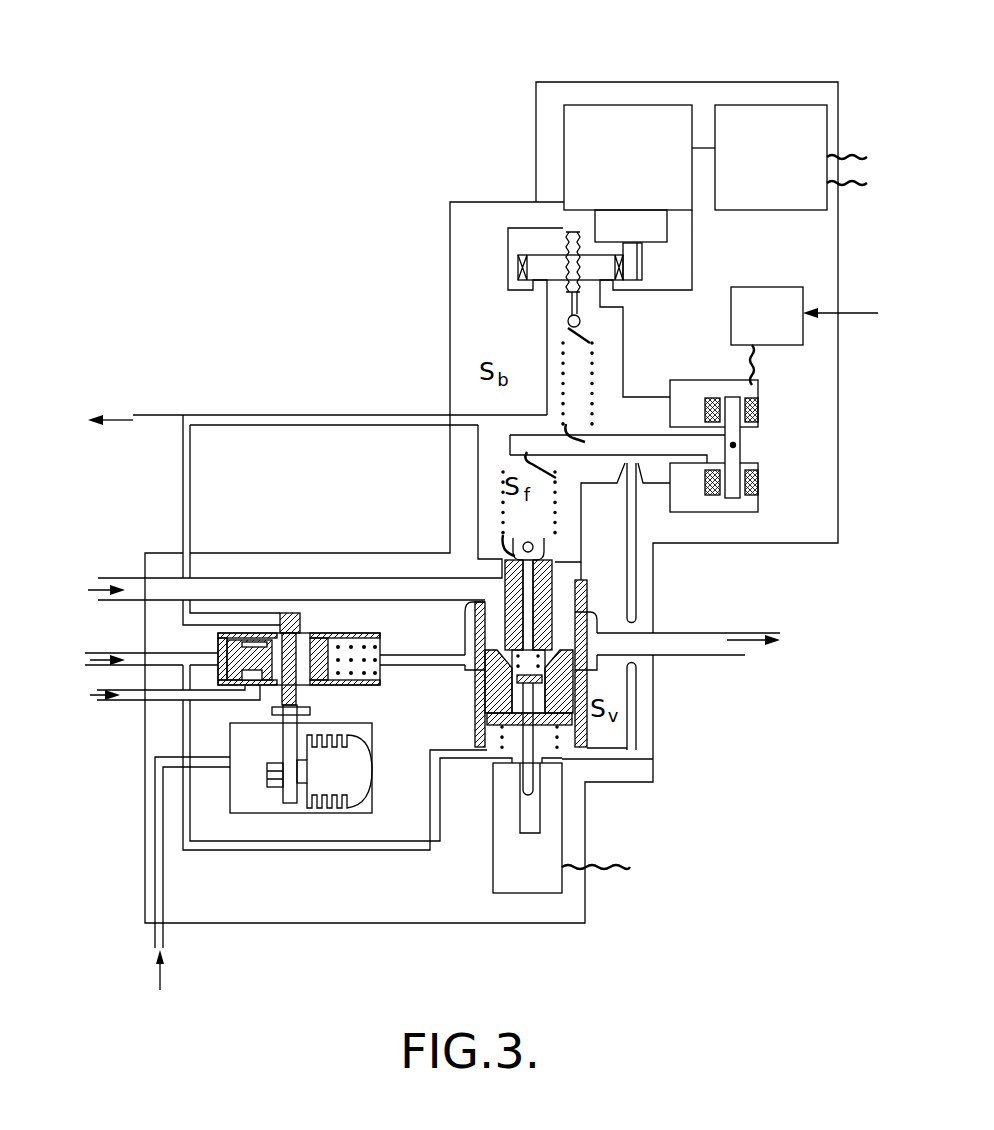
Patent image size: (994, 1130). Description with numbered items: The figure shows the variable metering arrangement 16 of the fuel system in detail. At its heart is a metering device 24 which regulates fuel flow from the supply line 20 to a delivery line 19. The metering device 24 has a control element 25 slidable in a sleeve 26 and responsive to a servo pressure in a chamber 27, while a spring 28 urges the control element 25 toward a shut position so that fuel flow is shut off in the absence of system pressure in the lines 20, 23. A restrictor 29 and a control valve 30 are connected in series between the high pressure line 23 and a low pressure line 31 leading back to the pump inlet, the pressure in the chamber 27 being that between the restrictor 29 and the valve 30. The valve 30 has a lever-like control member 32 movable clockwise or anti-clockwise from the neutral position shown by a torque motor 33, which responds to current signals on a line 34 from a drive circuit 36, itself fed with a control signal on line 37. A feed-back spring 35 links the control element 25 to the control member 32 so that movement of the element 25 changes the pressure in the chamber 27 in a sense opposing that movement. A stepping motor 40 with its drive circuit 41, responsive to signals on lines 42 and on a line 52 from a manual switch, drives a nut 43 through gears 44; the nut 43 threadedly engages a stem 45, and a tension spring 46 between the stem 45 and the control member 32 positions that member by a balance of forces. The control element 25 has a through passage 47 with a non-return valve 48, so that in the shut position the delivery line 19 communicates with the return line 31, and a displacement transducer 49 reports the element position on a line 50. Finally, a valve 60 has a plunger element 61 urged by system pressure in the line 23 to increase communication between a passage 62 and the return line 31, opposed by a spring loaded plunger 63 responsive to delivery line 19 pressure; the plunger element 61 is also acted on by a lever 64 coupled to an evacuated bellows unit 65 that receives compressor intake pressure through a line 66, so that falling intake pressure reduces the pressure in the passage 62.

The metering arrangement 16 is at (357, 910).
The delivery line 19 is at (718, 645).
The supply line 20 is at (118, 578).
The high pressure line 23 is at (130, 655).
The metering device 24 is at (592, 625).
The control element 25 is at (560, 690).
The sleeve 26 is at (478, 708).
The chamber 27 is at (540, 748).
The spring 28 is at (557, 740).
The restrictor 29 is at (457, 758).
The control valve 30 is at (629, 467).
The low pressure line 31 is at (272, 415).
The control member 32 is at (610, 445).
The torque motor 33 is at (761, 442).
The line 34 is at (750, 364).
The feed-back spring 35 is at (503, 488).
The drive circuit 36 is at (787, 330).
The line 37 is at (858, 310).
The stepping motor 40 is at (632, 120).
The drive circuit 41 is at (770, 120).
The lines 42 is at (849, 157).
The nut 43 is at (537, 268).
The gears 44 is at (672, 262).
The stem 45 is at (573, 240).
The tension spring 46 is at (562, 343).
The through passage 47 is at (527, 592).
The non-return valve 48 is at (530, 675).
The displacement transducer 49 is at (510, 880).
The line 50 is at (612, 867).
The line 52 is at (851, 185).
The valve 60 is at (251, 617).
The plunger element 61 is at (289, 636).
The passage 62 is at (128, 698).
The spring loaded plunger 63 is at (318, 655).
The lever 64 is at (292, 728).
The evacuated bellows unit 65 is at (340, 775).
The line 66 is at (157, 933).